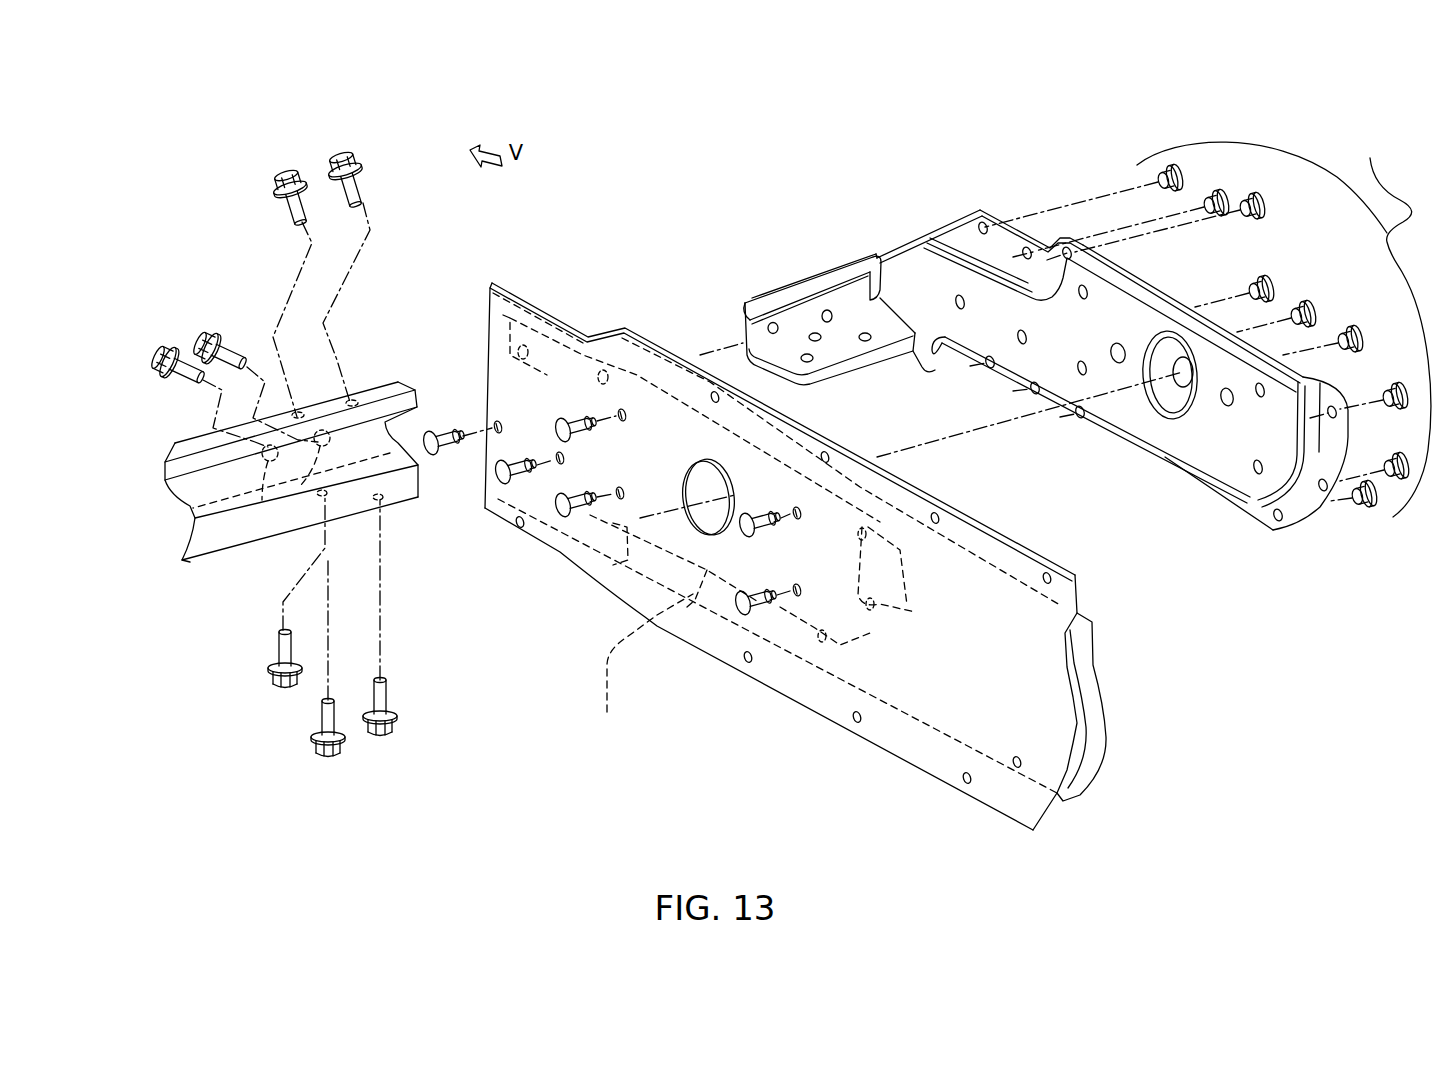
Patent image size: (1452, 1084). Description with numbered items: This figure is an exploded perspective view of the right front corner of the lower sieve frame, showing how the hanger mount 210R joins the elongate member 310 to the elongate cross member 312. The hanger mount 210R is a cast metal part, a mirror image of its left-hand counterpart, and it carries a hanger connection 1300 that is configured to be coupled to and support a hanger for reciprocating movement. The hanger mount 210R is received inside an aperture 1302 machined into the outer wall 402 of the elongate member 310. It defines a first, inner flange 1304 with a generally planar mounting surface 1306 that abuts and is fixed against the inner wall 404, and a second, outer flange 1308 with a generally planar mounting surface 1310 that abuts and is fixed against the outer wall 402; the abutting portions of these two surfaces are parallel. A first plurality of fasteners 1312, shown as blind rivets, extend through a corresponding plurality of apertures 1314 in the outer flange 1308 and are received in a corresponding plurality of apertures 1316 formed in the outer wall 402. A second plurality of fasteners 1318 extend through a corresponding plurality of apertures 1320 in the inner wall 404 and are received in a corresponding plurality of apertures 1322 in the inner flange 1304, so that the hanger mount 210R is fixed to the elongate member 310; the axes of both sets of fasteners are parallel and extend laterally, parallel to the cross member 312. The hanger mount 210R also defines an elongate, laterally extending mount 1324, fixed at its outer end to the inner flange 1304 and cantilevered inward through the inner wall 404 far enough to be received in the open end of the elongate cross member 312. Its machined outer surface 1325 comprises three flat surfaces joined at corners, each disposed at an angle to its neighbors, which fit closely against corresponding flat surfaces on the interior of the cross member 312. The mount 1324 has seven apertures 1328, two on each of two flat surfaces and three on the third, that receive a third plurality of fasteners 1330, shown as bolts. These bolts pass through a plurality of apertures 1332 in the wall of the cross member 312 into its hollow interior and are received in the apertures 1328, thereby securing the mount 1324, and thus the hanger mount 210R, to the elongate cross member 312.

The hanger mount 210R is at (873, 193).
The elongate member 310 is at (837, 747).
The elongate cross member 312 is at (212, 600).
The outer wall 402 is at (1103, 668).
The inner wall 404 is at (992, 680).
The hanger connection 1300 is at (1150, 403).
The aperture 1302 is at (638, 667).
The inner flange 1304 is at (1222, 462).
The mounting surface 1306 is at (1291, 445).
The outer flange 1308 is at (995, 212).
The mounting surface 1310 is at (1170, 462).
The first plurality of fasteners 1312 is at (1208, 325).
The apertures 1314 is at (1022, 250).
The apertures 1316 is at (637, 375).
The second plurality of fasteners 1318 is at (553, 505).
The apertures 1320 is at (563, 457).
The apertures 1322 is at (965, 303).
The mount 1324 is at (740, 250).
The outer surface 1325 is at (774, 292).
The apertures 1328 is at (830, 322).
The third plurality of fasteners 1330 is at (338, 152).
The apertures 1332 is at (318, 490).